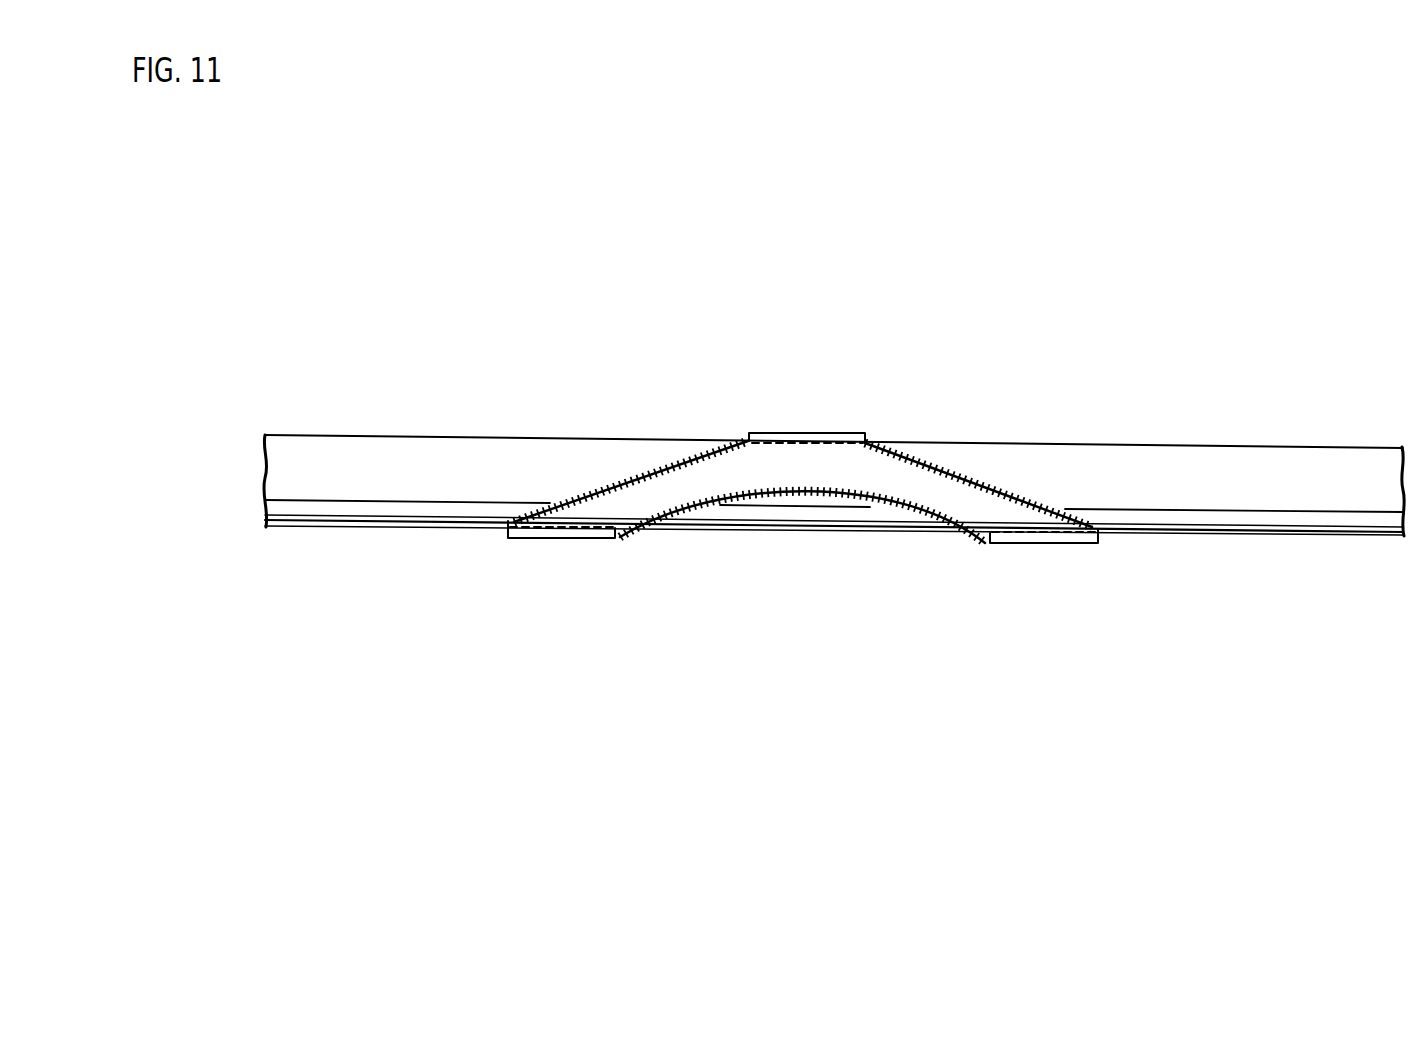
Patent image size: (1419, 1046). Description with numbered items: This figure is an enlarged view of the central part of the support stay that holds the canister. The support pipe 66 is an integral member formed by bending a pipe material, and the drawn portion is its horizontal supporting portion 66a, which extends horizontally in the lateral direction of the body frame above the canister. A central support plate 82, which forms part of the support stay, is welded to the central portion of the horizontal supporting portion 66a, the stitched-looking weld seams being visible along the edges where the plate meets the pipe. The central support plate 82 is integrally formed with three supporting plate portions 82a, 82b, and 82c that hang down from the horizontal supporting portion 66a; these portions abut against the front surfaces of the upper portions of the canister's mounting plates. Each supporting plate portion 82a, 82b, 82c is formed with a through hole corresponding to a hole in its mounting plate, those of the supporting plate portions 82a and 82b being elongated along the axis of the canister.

The support pipe 66 is at (438, 535).
The horizontal supporting portion 66a is at (518, 452).
The central support plate 82 is at (697, 478).
The supporting plate portion 82a is at (1036, 544).
The supporting plate portion 82b is at (558, 538).
The supporting plate portion 82c is at (829, 432).